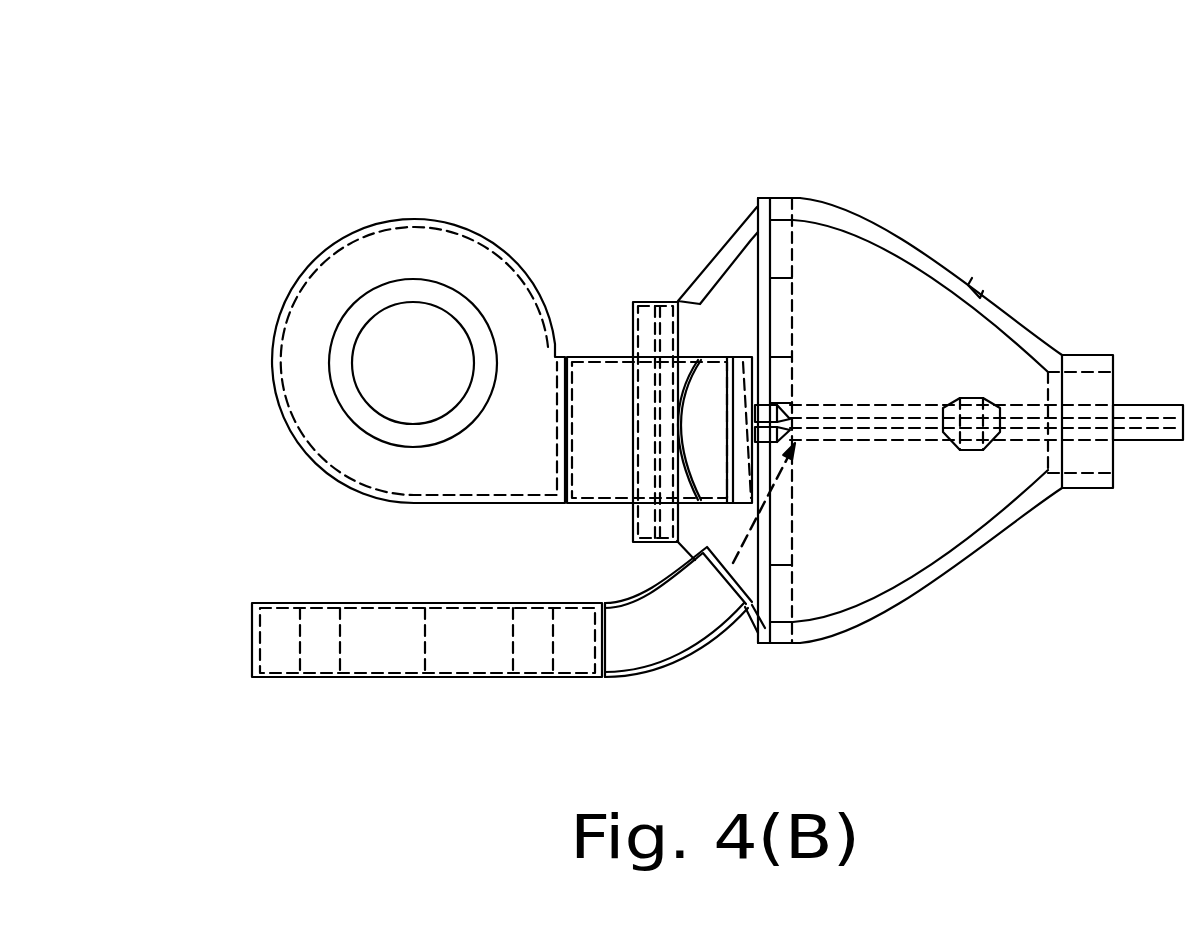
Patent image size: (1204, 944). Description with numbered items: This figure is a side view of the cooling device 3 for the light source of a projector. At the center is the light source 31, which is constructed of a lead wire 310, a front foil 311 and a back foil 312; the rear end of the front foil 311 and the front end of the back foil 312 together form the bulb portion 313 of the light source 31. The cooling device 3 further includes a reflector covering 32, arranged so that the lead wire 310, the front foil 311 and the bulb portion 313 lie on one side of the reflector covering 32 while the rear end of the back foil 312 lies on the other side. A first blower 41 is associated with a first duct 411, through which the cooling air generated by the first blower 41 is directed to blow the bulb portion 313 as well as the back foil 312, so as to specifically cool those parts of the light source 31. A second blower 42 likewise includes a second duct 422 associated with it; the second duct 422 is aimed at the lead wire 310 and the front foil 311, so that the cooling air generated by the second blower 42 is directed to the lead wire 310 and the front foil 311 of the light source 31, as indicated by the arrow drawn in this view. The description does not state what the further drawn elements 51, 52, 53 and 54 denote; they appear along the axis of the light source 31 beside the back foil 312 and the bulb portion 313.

The cooling device 3 is at (905, 387).
The light source 31 is at (955, 525).
The lead wire 310 is at (742, 357).
The front foil 311 is at (832, 443).
The back foil 312 is at (1058, 440).
The bulb portion 313 is at (970, 410).
The reflector covering 32 is at (907, 252).
The first blower 41 is at (403, 275).
The first duct 411 is at (707, 420).
The second blower 42 is at (390, 645).
The second duct 422 is at (668, 622).
The shaft 51 is at (843, 428).
The shaft section 52 is at (923, 428).
The shaft section 53 is at (1007, 430).
The shaft end 54 is at (1122, 427).